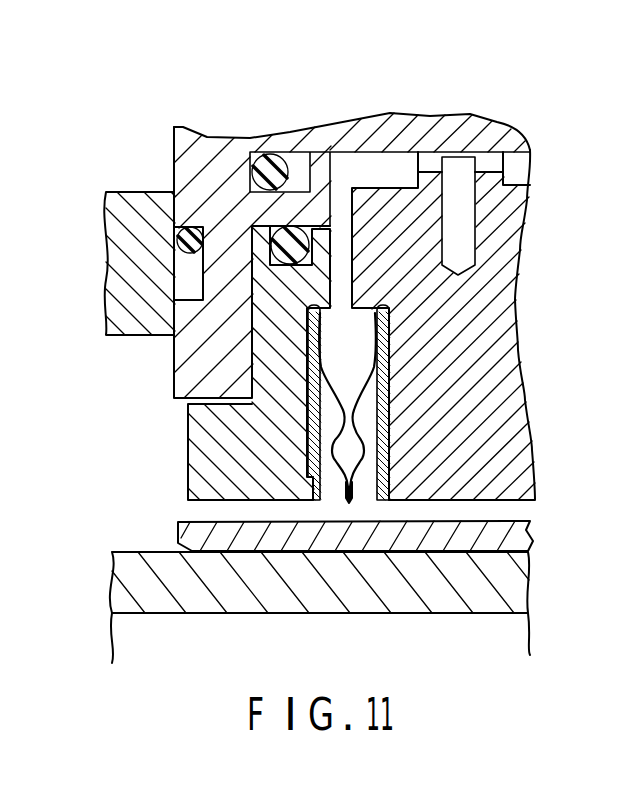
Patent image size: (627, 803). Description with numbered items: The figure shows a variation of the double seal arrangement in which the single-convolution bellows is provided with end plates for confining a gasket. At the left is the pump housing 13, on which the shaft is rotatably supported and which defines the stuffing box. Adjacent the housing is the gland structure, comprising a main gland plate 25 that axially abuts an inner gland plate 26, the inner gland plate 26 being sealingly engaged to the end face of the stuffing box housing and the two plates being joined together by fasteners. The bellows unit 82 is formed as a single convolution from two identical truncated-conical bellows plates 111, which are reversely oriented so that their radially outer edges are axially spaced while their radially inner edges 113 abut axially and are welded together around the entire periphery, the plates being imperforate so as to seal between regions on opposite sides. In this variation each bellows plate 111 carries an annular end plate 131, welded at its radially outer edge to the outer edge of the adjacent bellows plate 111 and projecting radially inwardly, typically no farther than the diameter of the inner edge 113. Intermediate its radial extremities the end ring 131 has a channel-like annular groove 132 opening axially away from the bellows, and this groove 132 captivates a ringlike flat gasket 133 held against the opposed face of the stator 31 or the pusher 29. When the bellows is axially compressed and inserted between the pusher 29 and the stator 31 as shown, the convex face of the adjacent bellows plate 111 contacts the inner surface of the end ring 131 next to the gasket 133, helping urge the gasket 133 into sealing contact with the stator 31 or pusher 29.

The housing 13 is at (135, 214).
The main gland plate 25 is at (347, 132).
The inner gland plate 26 is at (209, 147).
The pusher 29 is at (207, 442).
The stator 31 is at (500, 308).
The bellows unit 82 is at (352, 487).
The bellows plate 111 is at (360, 390).
The radially inner edge 113 is at (349, 499).
The annular end plate 131 is at (315, 488).
The channel-like annular groove 132 is at (389, 381).
The ringlike flat gasket 133 is at (388, 453).